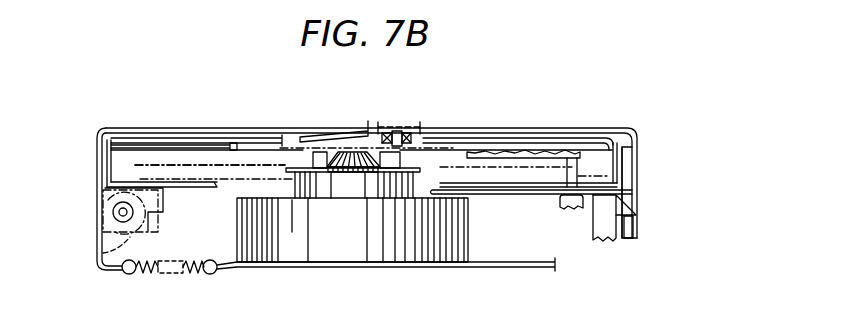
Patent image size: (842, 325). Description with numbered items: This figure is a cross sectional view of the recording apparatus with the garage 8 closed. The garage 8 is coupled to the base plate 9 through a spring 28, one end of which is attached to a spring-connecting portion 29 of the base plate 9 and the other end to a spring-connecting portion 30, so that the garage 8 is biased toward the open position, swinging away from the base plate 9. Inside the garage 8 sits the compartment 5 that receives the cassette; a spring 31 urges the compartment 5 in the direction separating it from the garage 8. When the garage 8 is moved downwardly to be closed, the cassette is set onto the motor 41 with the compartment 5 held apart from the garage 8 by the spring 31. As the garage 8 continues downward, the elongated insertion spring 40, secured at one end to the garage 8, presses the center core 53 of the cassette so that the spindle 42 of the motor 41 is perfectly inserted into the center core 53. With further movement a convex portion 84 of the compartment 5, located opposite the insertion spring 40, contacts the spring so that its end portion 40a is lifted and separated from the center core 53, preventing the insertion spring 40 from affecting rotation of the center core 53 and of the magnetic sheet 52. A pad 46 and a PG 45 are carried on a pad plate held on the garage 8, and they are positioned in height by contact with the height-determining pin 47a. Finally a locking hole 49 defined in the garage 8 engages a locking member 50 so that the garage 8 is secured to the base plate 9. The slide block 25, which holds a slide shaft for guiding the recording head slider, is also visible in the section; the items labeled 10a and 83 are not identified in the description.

The compartment 5 is at (96, 150).
The garage 8 is at (115, 127).
The base plate 9 is at (489, 269).
The reel shaft 10a is at (118, 213).
The slide block 25 is at (573, 210).
The spring 28 is at (178, 276).
The spring-connecting portion 29 is at (216, 274).
The spring-connecting portion 30 is at (120, 274).
The spring 31 is at (103, 250).
The insertion spring 40 is at (267, 132).
The one end portion of the insertion spring 40a is at (340, 132).
The motor 41 is at (410, 259).
The spindle 42 is at (350, 151).
The PG (pulse generator) 45 is at (393, 132).
The pad 46 is at (517, 154).
The height-determining pin 47a is at (580, 170).
The locking hole 49 is at (637, 207).
The locking member 50 is at (627, 213).
The magnetic sheet 52 is at (170, 162).
The center core 53 is at (316, 152).
The chassis channel 83 is at (635, 153).
The convex portion 84 is at (222, 142).